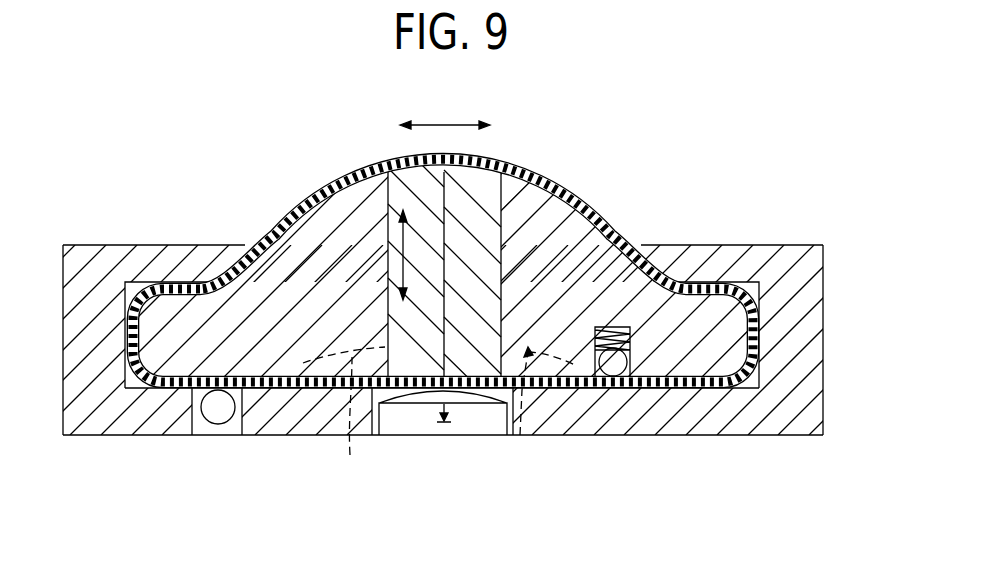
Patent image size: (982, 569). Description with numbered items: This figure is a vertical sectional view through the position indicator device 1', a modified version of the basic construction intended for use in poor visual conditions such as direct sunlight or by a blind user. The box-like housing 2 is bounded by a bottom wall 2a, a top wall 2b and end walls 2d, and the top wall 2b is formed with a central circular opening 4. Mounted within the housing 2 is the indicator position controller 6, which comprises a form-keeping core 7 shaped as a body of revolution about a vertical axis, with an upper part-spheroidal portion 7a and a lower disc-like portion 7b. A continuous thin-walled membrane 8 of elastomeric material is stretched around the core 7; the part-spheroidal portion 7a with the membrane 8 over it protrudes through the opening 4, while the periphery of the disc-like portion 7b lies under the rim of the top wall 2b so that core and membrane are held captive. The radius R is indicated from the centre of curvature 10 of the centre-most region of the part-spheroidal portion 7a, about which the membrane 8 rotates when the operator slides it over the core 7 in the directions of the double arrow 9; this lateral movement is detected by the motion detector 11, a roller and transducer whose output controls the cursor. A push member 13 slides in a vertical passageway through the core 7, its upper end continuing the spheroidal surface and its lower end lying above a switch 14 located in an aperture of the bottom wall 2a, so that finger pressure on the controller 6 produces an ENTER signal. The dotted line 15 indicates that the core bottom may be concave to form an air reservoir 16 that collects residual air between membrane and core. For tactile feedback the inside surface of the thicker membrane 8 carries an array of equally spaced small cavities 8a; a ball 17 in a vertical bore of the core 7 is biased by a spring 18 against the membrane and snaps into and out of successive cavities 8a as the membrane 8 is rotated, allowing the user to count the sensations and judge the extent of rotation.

The valve device 1' is at (491, 349).
The housing 2 is at (697, 440).
The bottom wall 2a is at (290, 418).
The top wall 2b is at (727, 263).
The end walls 2d is at (80, 326).
The central circular opening 4 is at (668, 267).
The indicator position controller 6 is at (524, 155).
The form-keeping core 7 is at (504, 252).
The upper part-spheroidal portion 7a is at (530, 198).
The lower disc-like portion 7b is at (570, 340).
The membrane 8 is at (281, 220).
The cavities 8a is at (222, 281).
The double arrow 9 is at (452, 125).
The centre of curvature 10 is at (447, 428).
The motion detector 11 is at (218, 410).
The push member 13 is at (479, 312).
The switch 14 is at (412, 415).
The dotted line 15 is at (520, 437).
The air reservoir 16 is at (348, 440).
The ball 17 is at (618, 368).
The spring 18 is at (600, 327).
The radius R is at (445, 264).